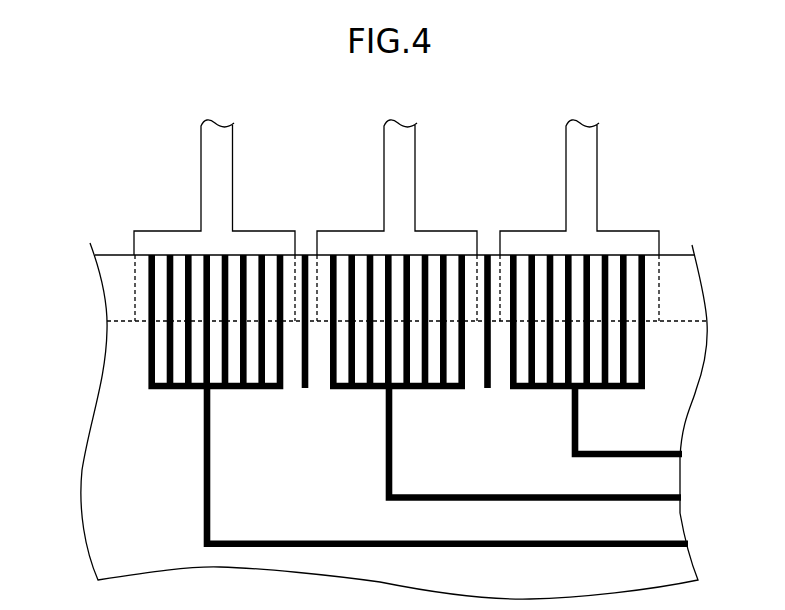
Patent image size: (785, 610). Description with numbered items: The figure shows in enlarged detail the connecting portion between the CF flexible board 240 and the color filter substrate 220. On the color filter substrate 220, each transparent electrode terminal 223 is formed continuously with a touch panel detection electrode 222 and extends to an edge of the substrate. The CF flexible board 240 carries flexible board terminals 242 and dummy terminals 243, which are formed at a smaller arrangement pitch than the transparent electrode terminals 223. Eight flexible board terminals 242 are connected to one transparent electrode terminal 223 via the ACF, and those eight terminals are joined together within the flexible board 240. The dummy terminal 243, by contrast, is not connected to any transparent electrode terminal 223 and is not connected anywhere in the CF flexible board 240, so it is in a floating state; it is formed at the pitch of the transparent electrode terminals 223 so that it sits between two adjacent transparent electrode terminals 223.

The color filter substrate 220 is at (391, 319).
The touch panel detection electrode 222 is at (393, 159).
The transparent electrode terminal 223 is at (142, 285).
The CF flexible board 240 is at (90, 477).
The flexible board terminal 242 is at (384, 367).
The dummy terminal 243 is at (303, 382).